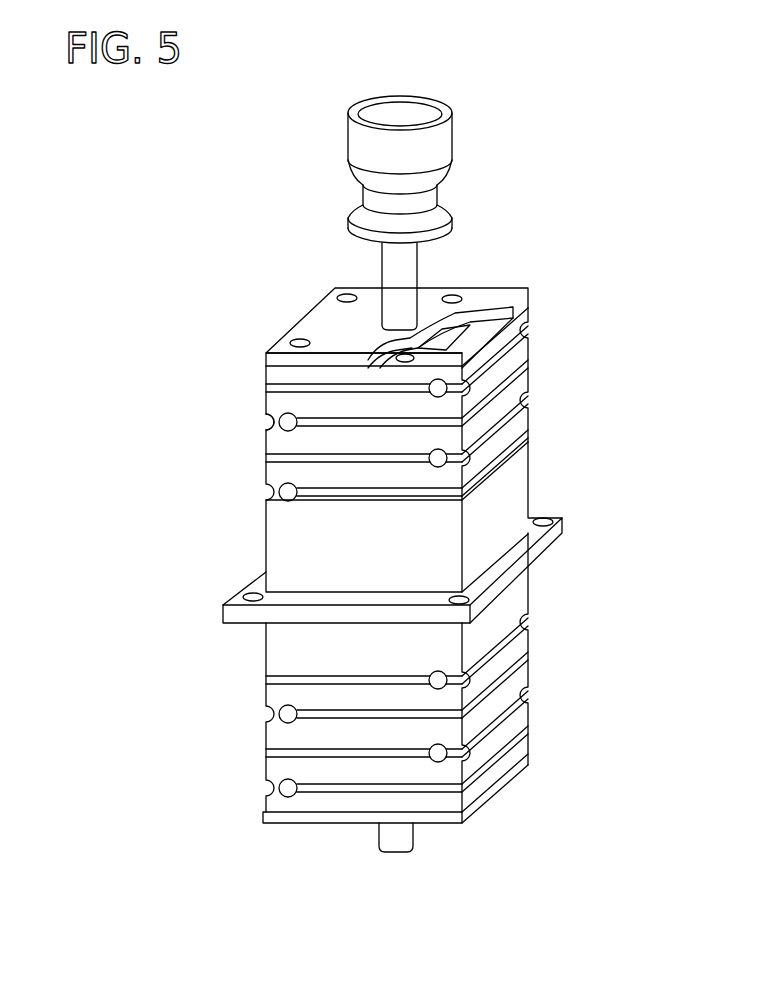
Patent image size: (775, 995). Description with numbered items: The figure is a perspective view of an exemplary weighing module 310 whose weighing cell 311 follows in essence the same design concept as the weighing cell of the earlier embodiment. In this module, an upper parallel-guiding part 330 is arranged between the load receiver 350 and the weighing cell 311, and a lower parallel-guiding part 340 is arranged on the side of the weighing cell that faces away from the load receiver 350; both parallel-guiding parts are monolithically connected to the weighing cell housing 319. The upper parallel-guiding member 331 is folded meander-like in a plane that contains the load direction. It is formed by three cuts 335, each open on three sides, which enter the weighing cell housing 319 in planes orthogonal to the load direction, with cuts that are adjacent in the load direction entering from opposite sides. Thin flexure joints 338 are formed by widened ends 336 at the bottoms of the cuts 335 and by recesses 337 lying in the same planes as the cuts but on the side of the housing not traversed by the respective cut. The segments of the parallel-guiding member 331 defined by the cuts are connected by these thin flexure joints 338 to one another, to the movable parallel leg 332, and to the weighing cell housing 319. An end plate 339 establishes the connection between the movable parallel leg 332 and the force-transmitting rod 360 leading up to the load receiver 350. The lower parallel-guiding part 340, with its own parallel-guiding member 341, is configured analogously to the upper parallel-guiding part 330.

The weighing module 310 is at (210, 694).
The weighing cell 311 is at (519, 521).
The weighing cell housing 319 is at (372, 533).
The upper parallel-guiding part 330 is at (560, 370).
The upper parallel-guiding member 331 is at (355, 438).
The movable parallel leg 332 is at (470, 340).
The cuts 335 is at (410, 425).
The widened ends 336 is at (290, 427).
The recesses 337 is at (272, 423).
The thin flexure joints 338 is at (272, 423).
The end plate 339 is at (335, 323).
The lower parallel-guiding part 340 is at (566, 685).
The parallel-guiding member 341 is at (408, 735).
The load receiver 350 is at (409, 151).
The force-transmitting rod 360 is at (398, 280).